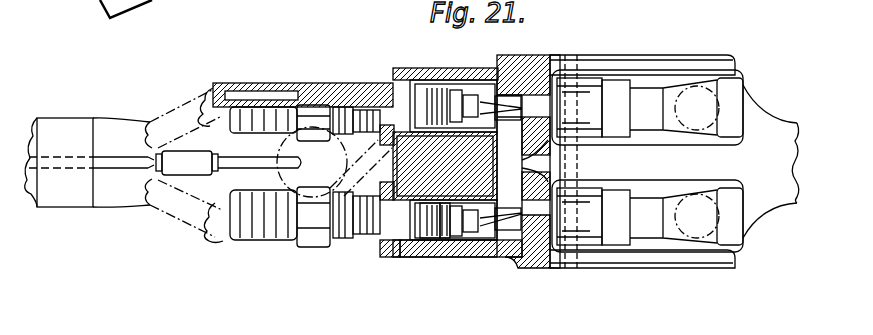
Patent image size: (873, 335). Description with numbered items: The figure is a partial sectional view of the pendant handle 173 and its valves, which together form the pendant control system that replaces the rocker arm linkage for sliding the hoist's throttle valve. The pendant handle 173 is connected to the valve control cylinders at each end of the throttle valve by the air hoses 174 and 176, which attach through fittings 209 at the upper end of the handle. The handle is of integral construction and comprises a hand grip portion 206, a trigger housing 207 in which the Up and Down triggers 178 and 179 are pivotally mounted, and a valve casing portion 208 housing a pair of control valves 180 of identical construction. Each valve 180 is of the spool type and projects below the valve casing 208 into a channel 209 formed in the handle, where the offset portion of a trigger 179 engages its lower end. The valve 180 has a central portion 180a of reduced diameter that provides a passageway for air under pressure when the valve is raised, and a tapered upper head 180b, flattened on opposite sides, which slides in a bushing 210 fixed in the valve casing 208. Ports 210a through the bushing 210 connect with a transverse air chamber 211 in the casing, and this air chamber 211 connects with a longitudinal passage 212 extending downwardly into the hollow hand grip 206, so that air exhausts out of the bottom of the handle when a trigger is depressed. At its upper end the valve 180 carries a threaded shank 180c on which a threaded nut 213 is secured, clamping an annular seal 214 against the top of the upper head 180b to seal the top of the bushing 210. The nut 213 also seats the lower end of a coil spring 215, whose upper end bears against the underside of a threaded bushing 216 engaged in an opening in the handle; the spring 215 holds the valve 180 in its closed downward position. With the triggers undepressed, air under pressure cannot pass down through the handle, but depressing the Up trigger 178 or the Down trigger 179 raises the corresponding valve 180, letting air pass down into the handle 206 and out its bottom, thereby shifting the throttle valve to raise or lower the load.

The pendant handle 173 is at (724, 268).
The air hose 174 is at (128, 198).
The air hose 176 is at (133, 118).
The Up trigger 178 is at (640, 95).
The Down trigger 179 is at (652, 240).
The control valve 180 is at (494, 80).
The central portion of reduced diameter 180a is at (505, 257).
The upper head 180b is at (500, 257).
The threaded shank 180c is at (493, 80).
The hand grip portion 206 is at (772, 125).
The trigger housing 207 is at (717, 57).
The valve casing portion 208 is at (415, 258).
The fittings 209 is at (299, 84).
The bushing 210 is at (518, 257).
The ports 210a is at (548, 162).
The transverse air chamber 211 is at (549, 140).
The longitudinal passage 212 is at (579, 56).
The threaded nut 213 is at (480, 250).
The annular seal 214 is at (445, 166).
The coil spring 215 is at (443, 257).
The threaded bushing 216 is at (392, 243).